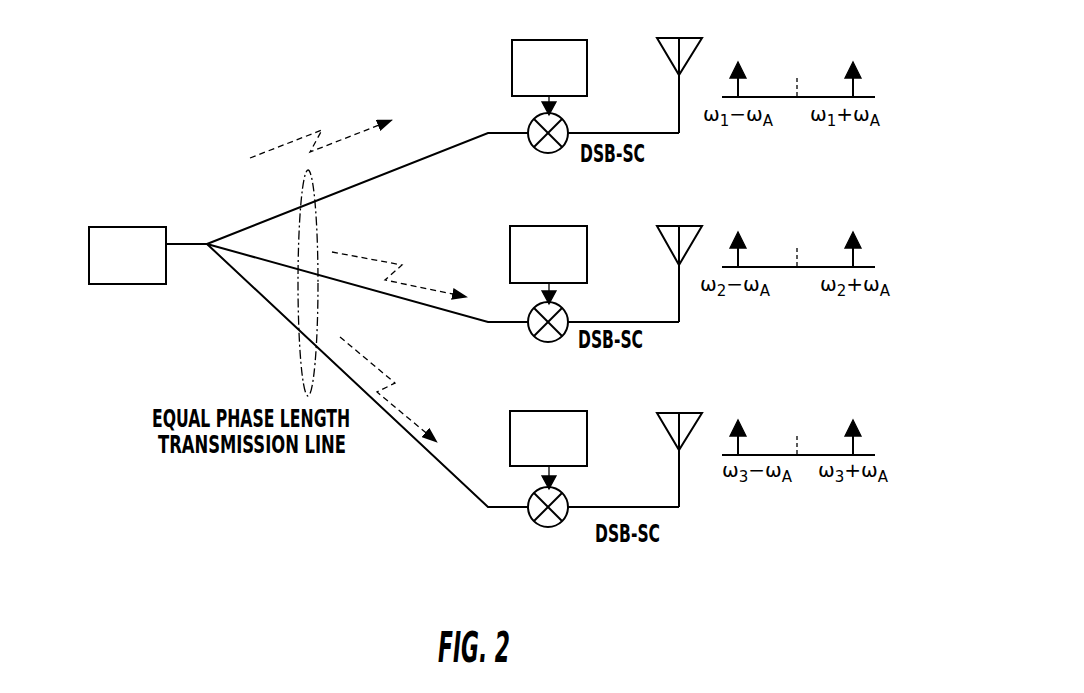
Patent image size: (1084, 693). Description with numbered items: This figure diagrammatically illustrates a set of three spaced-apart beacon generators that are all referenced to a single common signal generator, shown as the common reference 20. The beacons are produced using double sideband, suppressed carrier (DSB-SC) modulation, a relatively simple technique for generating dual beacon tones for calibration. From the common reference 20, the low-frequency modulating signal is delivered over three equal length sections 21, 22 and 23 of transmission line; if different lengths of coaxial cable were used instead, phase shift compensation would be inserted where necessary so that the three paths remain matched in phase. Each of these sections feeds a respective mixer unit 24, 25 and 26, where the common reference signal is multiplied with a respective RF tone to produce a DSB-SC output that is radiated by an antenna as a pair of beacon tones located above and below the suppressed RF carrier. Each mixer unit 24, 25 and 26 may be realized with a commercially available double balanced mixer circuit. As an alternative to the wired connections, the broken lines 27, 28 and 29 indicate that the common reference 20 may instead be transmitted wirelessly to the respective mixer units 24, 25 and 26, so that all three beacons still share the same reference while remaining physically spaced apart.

The common reference 20 is at (123, 227).
The transmission line section 21 is at (243, 230).
The transmission line section 22 is at (243, 254).
The transmission line section 23 is at (262, 295).
The mixer unit 24 is at (545, 154).
The mixer unit 25 is at (546, 343).
The mixer unit 26 is at (548, 527).
The broken line 27 is at (345, 137).
The broken line 28 is at (375, 260).
The broken line 29 is at (368, 361).